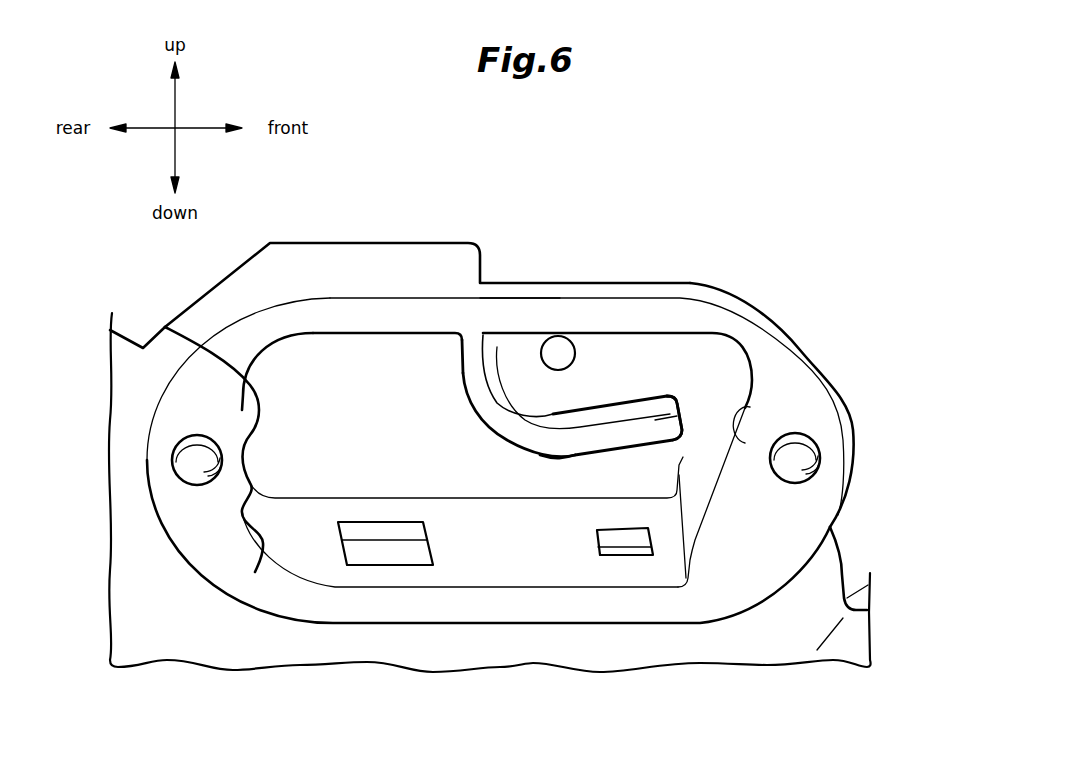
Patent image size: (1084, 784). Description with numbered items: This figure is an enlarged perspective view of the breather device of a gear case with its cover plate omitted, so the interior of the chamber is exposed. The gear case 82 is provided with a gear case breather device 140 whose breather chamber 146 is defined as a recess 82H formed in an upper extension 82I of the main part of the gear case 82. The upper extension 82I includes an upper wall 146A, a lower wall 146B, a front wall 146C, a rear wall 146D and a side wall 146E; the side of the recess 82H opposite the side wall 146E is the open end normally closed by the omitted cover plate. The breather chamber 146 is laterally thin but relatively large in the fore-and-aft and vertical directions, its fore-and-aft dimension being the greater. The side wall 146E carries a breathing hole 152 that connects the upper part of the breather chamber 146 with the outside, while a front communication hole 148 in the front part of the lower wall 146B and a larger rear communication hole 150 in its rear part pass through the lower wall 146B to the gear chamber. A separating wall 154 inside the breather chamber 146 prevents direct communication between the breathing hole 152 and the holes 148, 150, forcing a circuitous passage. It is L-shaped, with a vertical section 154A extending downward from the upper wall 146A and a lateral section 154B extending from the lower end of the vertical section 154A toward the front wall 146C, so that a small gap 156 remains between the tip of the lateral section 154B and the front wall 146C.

The gear case 82 is at (807, 585).
The recess 82H is at (167, 320).
The upper extension 82I is at (292, 272).
The gear case breather device 140 is at (703, 282).
The breather chamber 146 is at (478, 510).
The upper wall 146A is at (513, 320).
The lower wall 146B is at (518, 557).
The front wall 146C is at (750, 407).
The rear wall 146D is at (262, 548).
The side wall 146E is at (378, 360).
The front communication hole 148 is at (617, 552).
The rear communication hole 150 is at (390, 545).
The breathing hole 152 is at (565, 356).
The separating wall 154 is at (638, 430).
The vertical section 154A is at (462, 378).
The lateral section 154B is at (586, 442).
The small gap 156 is at (690, 445).